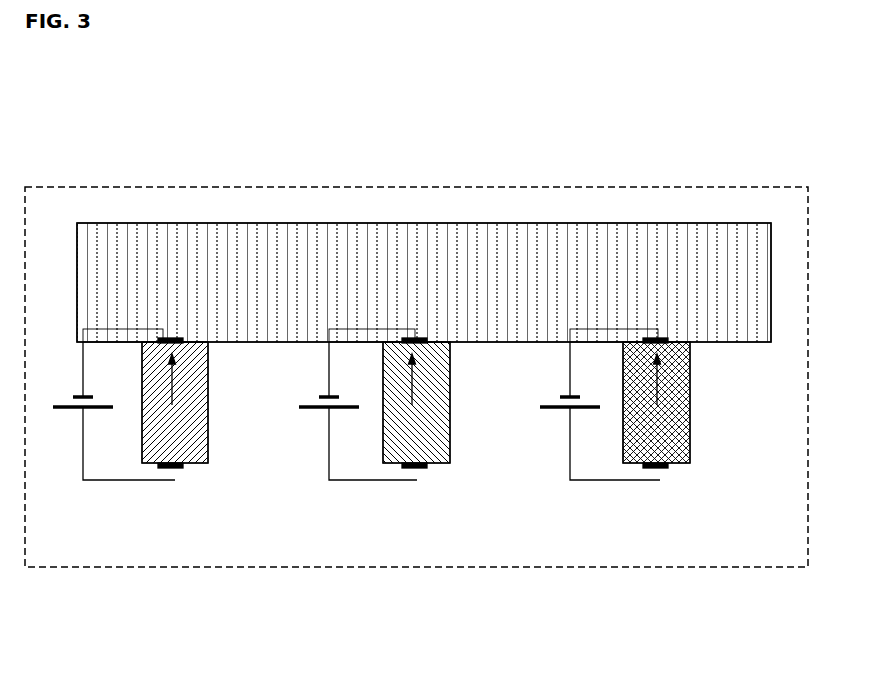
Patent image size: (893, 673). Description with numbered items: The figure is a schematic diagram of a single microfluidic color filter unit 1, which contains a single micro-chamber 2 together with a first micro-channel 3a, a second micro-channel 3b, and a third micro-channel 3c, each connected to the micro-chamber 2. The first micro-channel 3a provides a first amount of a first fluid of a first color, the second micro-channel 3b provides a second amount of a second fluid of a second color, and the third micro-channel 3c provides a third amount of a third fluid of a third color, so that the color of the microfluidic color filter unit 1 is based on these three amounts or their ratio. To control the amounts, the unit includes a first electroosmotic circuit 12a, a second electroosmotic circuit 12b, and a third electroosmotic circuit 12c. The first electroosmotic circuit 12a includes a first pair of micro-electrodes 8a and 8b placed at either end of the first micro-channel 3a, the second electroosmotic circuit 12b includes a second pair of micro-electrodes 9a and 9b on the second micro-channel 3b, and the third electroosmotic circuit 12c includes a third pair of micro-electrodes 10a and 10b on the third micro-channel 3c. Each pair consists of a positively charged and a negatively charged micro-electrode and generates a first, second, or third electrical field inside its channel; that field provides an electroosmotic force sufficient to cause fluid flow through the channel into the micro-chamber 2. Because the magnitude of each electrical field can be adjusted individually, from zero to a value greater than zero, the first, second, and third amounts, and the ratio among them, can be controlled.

The microfluidic color filter unit 1 is at (483, 187).
The micro-chamber 2 is at (180, 223).
The first micro-channel 3a is at (208, 463).
The second micro-channel 3b is at (450, 463).
The third micro-channel 3c is at (690, 463).
The first pair of micro-electrodes 8a is at (183, 339).
The first pair of micro-electrodes 8b is at (175, 468).
The second pair of micro-electrodes 9a is at (427, 339).
The second pair of micro-electrodes 9b is at (417, 468).
The third pair of micro-electrodes 10a is at (668, 339).
The third pair of micro-electrodes 10b is at (660, 468).
The first electroosmotic circuit 12a is at (83, 480).
The second electroosmotic circuit 12b is at (329, 480).
The third electroosmotic circuit 12c is at (570, 480).